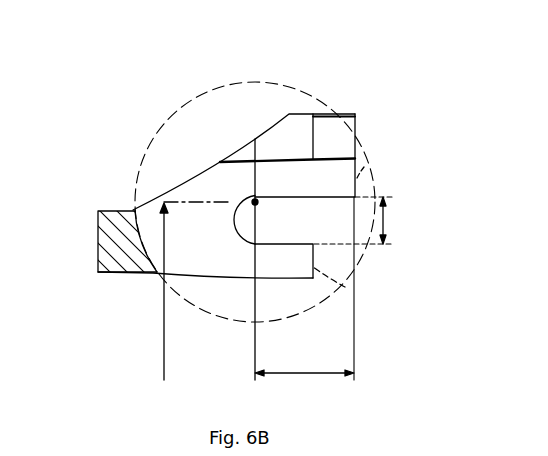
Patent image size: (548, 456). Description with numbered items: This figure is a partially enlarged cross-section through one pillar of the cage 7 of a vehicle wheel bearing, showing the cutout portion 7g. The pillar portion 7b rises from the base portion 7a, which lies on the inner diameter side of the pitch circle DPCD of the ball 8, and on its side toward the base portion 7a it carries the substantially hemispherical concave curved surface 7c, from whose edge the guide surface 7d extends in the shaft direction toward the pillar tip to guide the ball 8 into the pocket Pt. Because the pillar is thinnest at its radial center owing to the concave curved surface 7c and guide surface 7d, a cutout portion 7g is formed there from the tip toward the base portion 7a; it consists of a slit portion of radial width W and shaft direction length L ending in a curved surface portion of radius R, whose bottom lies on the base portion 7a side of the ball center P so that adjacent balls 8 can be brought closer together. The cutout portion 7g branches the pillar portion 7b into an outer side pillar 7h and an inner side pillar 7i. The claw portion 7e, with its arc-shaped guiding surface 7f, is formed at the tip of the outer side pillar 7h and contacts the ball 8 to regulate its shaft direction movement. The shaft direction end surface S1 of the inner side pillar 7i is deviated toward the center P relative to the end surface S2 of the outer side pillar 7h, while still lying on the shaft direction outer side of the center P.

The cage 7 is at (78, 45).
The base portion 7a is at (97, 243).
The pillar portion 7b is at (447, 180).
The concave curved surface 7c is at (134, 209).
The guide surface 7d is at (292, 182).
The claw portion 7e is at (368, 64).
The guiding surface 7f is at (346, 113).
The cutout portion 7g is at (296, 215).
The outer side pillar 7h is at (341, 182).
The inner side pillar 7i is at (306, 254).
The ball 8 is at (222, 87).
The predetermined position P is at (254, 200).
The pocket Pt is at (193, 198).
The radius R is at (230, 232).
The shaft direction end surface of the inner side pillar S1 is at (345, 287).
The shaft direction end surface of the outer side pillar S2 is at (364, 167).
The radial width W is at (361, 220).
The shaft direction length L is at (304, 288).
The pitch circle PCD DPCD is at (141, 293).